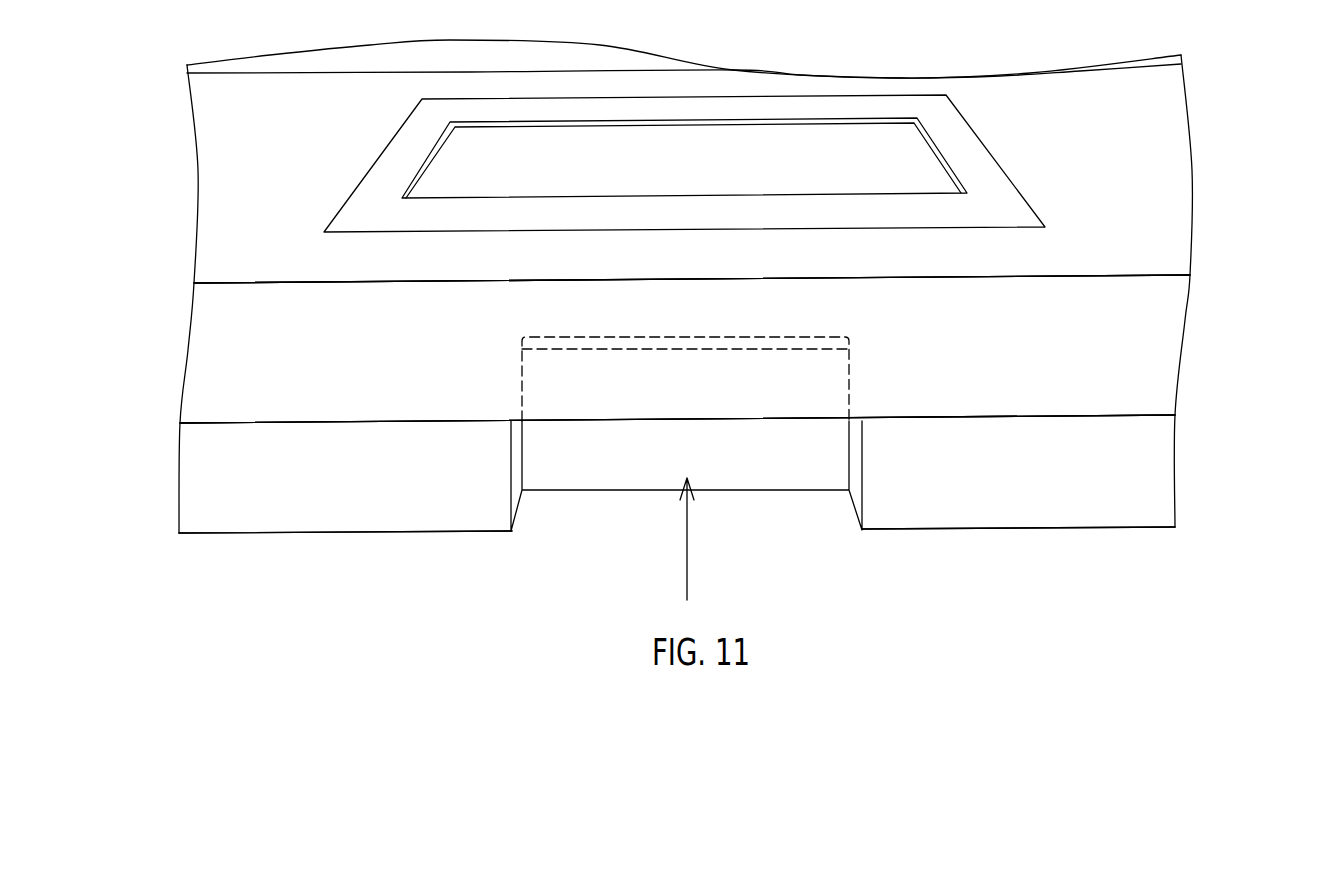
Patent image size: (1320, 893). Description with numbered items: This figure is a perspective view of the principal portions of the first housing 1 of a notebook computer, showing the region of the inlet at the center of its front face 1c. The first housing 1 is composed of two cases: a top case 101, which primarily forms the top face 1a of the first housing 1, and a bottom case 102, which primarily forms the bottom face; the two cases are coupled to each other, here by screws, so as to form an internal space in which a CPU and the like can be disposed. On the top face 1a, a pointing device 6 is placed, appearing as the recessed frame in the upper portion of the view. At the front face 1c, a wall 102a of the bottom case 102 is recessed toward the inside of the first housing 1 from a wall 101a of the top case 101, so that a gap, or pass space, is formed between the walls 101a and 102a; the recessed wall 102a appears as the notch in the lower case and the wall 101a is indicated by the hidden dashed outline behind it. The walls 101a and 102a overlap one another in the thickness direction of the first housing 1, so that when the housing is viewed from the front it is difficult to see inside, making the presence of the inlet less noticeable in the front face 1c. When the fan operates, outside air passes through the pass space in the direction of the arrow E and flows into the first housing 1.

The first housing 1 is at (1219, 156).
The top face 1a is at (1146, 119).
The front face 1c is at (1149, 307).
The pointing device 6 is at (846, 140).
The top case 101 is at (1138, 368).
The wall of the top case 101a is at (597, 382).
The bottom case 102 is at (1138, 467).
The wall of the bottom case 102a is at (787, 460).
The arrow E is at (686, 551).